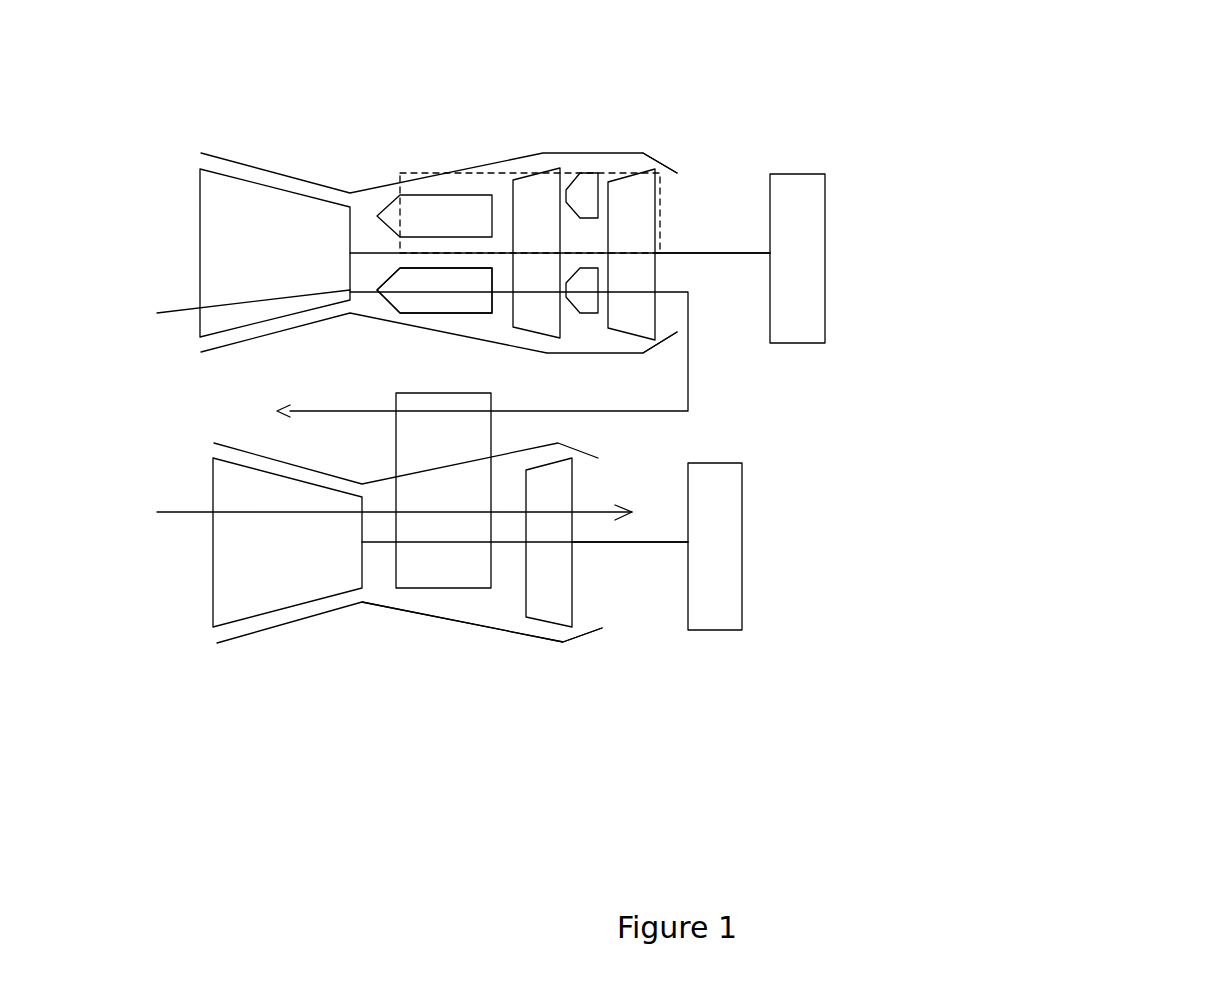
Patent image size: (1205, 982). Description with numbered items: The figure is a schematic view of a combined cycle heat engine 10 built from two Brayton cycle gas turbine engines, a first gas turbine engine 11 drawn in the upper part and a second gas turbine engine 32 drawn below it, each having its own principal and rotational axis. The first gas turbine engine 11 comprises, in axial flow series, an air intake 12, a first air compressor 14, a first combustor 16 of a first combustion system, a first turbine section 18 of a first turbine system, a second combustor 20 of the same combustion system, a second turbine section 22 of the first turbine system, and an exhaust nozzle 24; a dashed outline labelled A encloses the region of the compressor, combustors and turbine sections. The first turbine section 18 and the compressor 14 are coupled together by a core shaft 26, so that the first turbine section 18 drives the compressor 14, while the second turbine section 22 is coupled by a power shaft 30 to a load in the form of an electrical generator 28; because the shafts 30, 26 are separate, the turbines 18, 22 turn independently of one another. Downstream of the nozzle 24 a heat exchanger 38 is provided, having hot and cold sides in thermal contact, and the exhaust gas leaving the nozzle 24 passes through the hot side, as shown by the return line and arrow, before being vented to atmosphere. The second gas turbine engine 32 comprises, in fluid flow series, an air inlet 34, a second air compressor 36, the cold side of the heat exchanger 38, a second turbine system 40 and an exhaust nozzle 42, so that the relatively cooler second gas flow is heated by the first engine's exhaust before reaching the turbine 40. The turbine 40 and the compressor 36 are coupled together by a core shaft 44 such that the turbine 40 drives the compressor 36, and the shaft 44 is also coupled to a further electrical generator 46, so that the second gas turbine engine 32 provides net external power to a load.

The combined cycle heat engine 10 is at (1022, 375).
The first gas turbine engine 11 is at (685, 110).
The air intake 12 is at (190, 338).
The first air compressor 14 is at (212, 218).
The first combustor 16 is at (395, 195).
The first turbine section 18 is at (537, 173).
The second combustor 20 is at (583, 180).
The second turbine section 22 is at (655, 197).
The exhaust nozzle 24 is at (687, 198).
The core shaft 26 is at (397, 268).
The electrical generator 28 is at (825, 197).
The power shaft 30 is at (712, 253).
The second gas turbine engine 32 is at (435, 687).
The air inlet 34 is at (200, 458).
The second air compressor 36 is at (212, 588).
The heat exchanger 38 is at (465, 588).
The second turbine system 40 is at (573, 571).
The exhaust nozzle 42 is at (608, 633).
The core shaft 44 is at (653, 542).
The electrical generator 46 is at (742, 588).
The region A is at (415, 173).